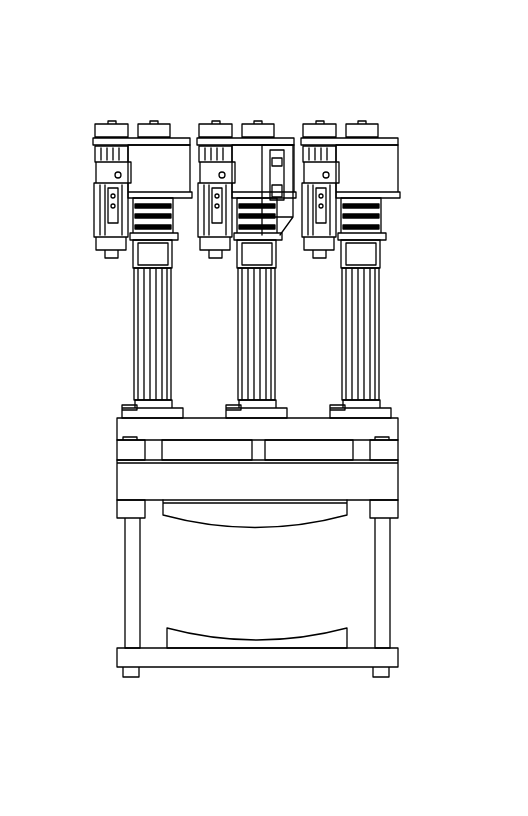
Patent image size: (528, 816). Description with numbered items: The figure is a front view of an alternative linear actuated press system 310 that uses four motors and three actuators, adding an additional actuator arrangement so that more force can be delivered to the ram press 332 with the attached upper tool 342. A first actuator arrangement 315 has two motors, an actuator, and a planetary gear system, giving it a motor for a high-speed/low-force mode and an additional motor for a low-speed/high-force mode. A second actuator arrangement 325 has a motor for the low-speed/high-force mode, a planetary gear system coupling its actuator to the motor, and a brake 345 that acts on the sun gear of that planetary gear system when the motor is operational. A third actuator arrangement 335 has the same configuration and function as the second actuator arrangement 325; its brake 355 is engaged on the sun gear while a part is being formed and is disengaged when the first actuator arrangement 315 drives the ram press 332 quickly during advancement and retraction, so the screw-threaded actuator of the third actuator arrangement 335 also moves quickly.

The linear actuated press system 310 is at (199, 36).
The brake 355 is at (155, 123).
The brake 345 is at (360, 123).
The second actuator arrangement 325 is at (385, 282).
The first actuator arrangement 315 is at (282, 337).
The third actuator arrangement 335 is at (179, 338).
The ram press 332 is at (378, 482).
The upper tool 342 is at (323, 508).